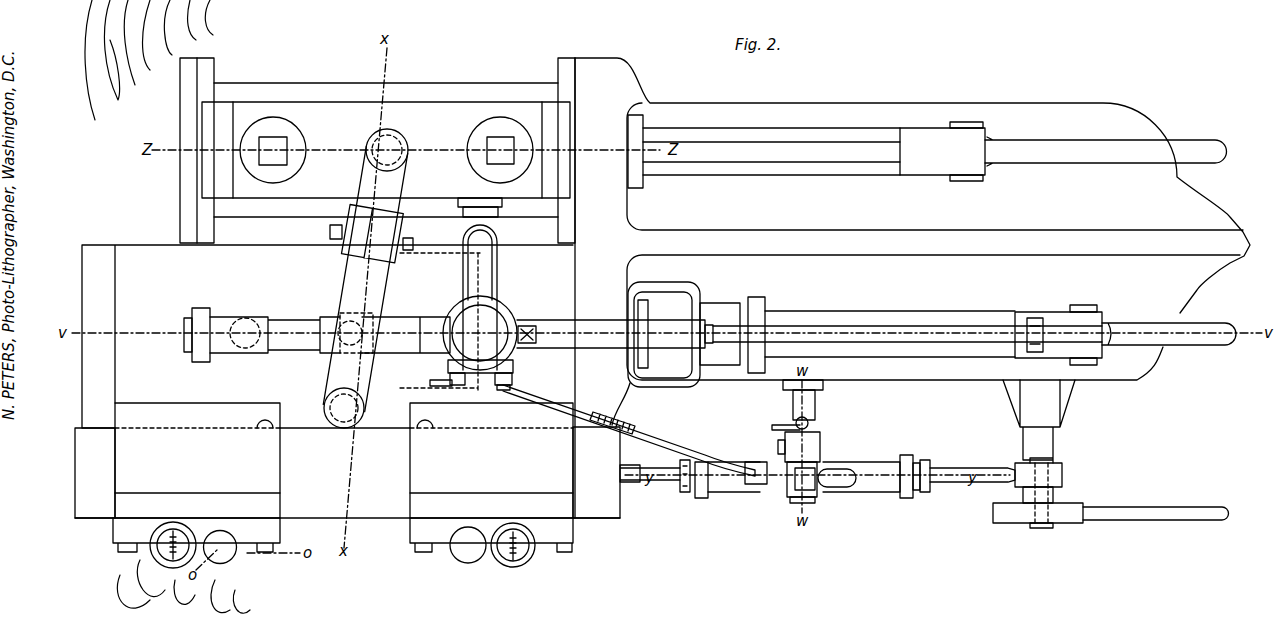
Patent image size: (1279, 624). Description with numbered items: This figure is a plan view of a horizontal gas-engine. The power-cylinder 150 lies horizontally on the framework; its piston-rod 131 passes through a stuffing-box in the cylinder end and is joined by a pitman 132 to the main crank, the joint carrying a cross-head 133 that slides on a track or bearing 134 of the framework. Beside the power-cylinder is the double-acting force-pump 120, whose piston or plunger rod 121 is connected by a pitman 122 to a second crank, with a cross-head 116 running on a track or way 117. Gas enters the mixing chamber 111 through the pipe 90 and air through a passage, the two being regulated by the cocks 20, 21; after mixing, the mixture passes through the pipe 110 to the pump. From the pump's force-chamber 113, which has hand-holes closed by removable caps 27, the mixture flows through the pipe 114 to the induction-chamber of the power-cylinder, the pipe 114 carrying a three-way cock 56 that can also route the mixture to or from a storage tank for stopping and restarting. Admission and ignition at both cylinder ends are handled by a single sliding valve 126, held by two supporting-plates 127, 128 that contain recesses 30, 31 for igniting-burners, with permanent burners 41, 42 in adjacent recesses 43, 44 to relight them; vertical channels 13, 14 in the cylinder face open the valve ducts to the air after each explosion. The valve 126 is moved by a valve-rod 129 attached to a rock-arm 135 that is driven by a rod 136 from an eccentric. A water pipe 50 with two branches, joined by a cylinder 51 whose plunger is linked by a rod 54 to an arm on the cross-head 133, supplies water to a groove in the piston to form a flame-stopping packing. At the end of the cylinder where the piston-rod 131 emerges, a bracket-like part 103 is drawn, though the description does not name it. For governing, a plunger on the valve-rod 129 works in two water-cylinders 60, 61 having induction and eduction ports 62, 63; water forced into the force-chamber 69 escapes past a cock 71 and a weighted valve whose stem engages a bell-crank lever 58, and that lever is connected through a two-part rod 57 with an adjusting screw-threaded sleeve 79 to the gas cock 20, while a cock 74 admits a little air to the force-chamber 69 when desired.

The double-acting force-pump 120 is at (377, 288).
The removable caps 27 is at (386, 150).
The force-chamber 113 is at (370, 142).
The pipe 114 is at (365, 287).
The three-way cock 56 is at (330, 232).
The power-cylinder 150 is at (327, 336).
The pipe 50 is at (317, 335).
The cylinder 51 is at (392, 318).
The pipe 110 is at (480, 299).
The chamber 111 is at (510, 318).
The cock 21 is at (448, 385).
The cock 20 is at (512, 378).
The pipe 90 is at (536, 333).
The induction port 62 is at (615, 334).
The bracket 103 is at (664, 334).
The rod 54 is at (888, 326).
The piston-rod 131 is at (890, 342).
The track or bearing 134 is at (1027, 350).
The cross-head 133 is at (1058, 335).
The pitman 132 is at (1169, 334).
The piston or plunger rod 121 is at (764, 151).
The cross-head 116 is at (942, 148).
The track or way 117 is at (1028, 180).
The pitman 122 is at (1106, 151).
The vertical channel 13 is at (273, 425).
The vertical channel 14 is at (425, 428).
The valve 126 is at (347, 460).
The supporting-plate 127 is at (196, 535).
The supporting-plate 128 is at (491, 535).
The recess 43 is at (172, 530).
The permanent burner 41 is at (178, 538).
The recess 30 is at (228, 553).
The recess 31 is at (468, 545).
The recess 44 is at (510, 530).
The permanent burner 42 is at (512, 560).
The rock-arm 135 is at (1053, 492).
The rod 136 is at (1165, 522).
The valve-rod 129 is at (973, 460).
The water-cylinder 60 is at (690, 479).
The water-cylinder 61 is at (861, 477).
The eduction port 63 is at (837, 478).
The bell-crank lever 58 is at (790, 487).
The force-chamber 69 is at (820, 440).
The cock 71 is at (778, 446).
The cock 74 is at (778, 425).
The rod 57 is at (698, 450).
The right and left hand screw-threaded sleeve 79 is at (630, 412).